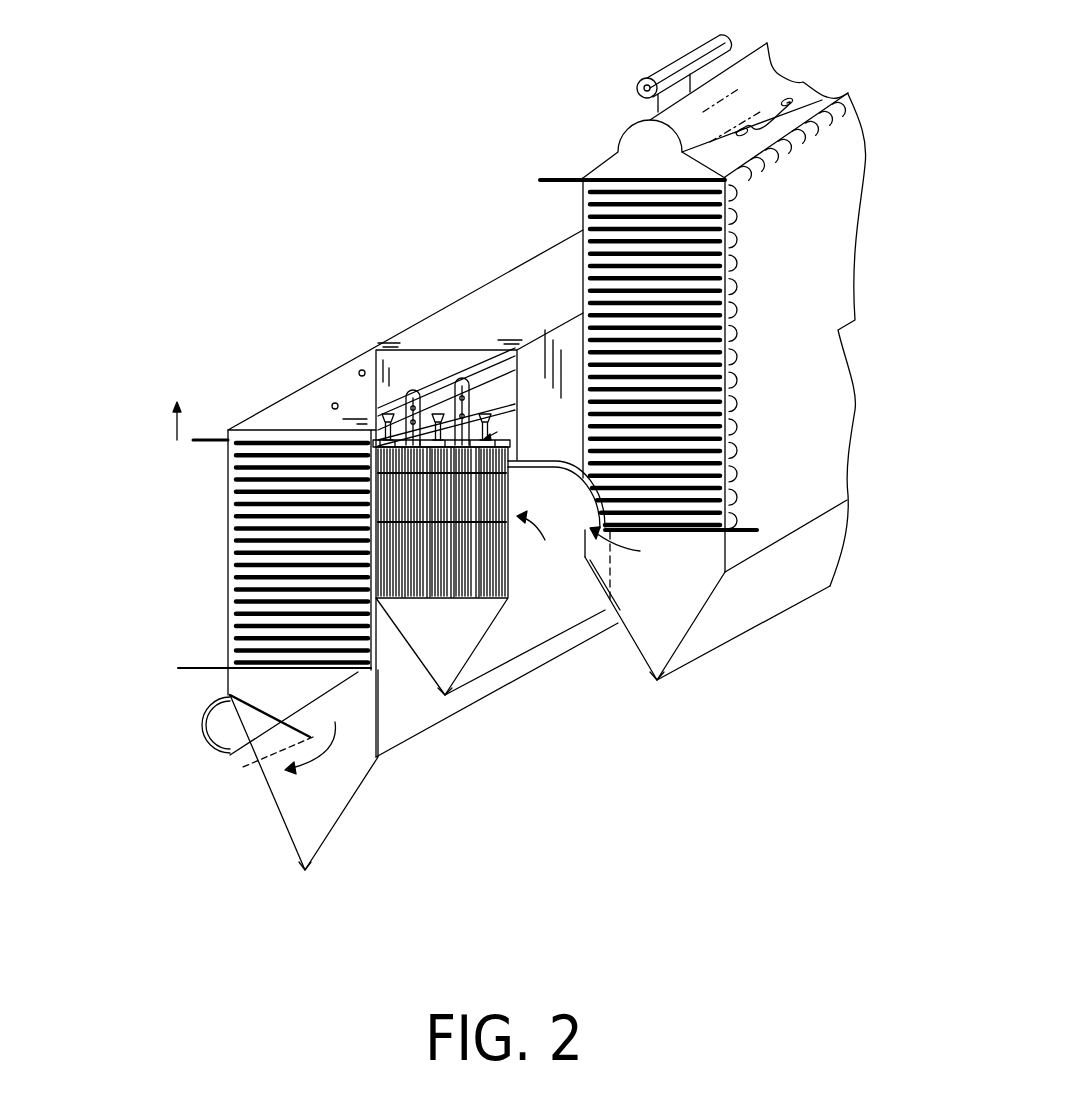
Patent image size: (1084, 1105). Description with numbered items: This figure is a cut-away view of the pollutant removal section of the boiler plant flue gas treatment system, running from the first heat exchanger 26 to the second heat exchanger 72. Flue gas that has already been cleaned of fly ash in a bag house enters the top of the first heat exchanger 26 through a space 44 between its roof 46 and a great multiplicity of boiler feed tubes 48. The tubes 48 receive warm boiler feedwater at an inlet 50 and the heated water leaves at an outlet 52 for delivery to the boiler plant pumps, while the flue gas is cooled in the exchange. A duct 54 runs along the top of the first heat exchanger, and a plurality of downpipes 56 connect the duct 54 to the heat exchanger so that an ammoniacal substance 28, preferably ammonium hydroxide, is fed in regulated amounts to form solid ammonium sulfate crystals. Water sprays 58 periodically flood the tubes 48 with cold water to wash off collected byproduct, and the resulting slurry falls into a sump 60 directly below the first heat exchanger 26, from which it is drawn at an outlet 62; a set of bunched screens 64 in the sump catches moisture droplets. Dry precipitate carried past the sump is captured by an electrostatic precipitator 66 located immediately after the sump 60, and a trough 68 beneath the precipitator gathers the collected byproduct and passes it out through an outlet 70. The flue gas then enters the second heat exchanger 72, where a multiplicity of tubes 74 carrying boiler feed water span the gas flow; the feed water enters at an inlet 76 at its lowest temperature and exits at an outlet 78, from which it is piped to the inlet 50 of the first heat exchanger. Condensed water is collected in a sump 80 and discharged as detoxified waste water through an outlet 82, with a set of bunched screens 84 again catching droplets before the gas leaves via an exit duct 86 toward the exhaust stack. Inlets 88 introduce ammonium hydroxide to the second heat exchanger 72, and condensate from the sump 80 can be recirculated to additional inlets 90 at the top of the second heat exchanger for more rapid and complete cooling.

The first heat exchanger 26 is at (811, 311).
The ammoniacal substance 28 is at (637, 90).
The space 44 is at (661, 169).
The roof 46 is at (642, 121).
The boiler feed tubes 48 is at (685, 357).
The inlet 50 is at (757, 532).
The outlet 52 is at (583, 178).
The duct 54 is at (697, 55).
The downpipes 56 is at (733, 63).
The water sprays 58 is at (832, 96).
The sump 60 is at (679, 598).
The outlet 62 is at (658, 681).
The bunched screens 64 is at (612, 600).
The electrostatic precipitator 66 is at (505, 560).
The trough 68 is at (458, 650).
The outlet 70 is at (447, 697).
The second heat exchanger 72 is at (288, 402).
The tubes 74 is at (272, 515).
The inlet 76 is at (178, 667).
The outlet 78 is at (180, 436).
The sump 80 is at (326, 818).
The outlet 82 is at (305, 872).
The bunched screens 84 is at (260, 762).
The exit duct 86 is at (230, 722).
The inlets 88 is at (333, 404).
The additional inlets 90 is at (362, 370).